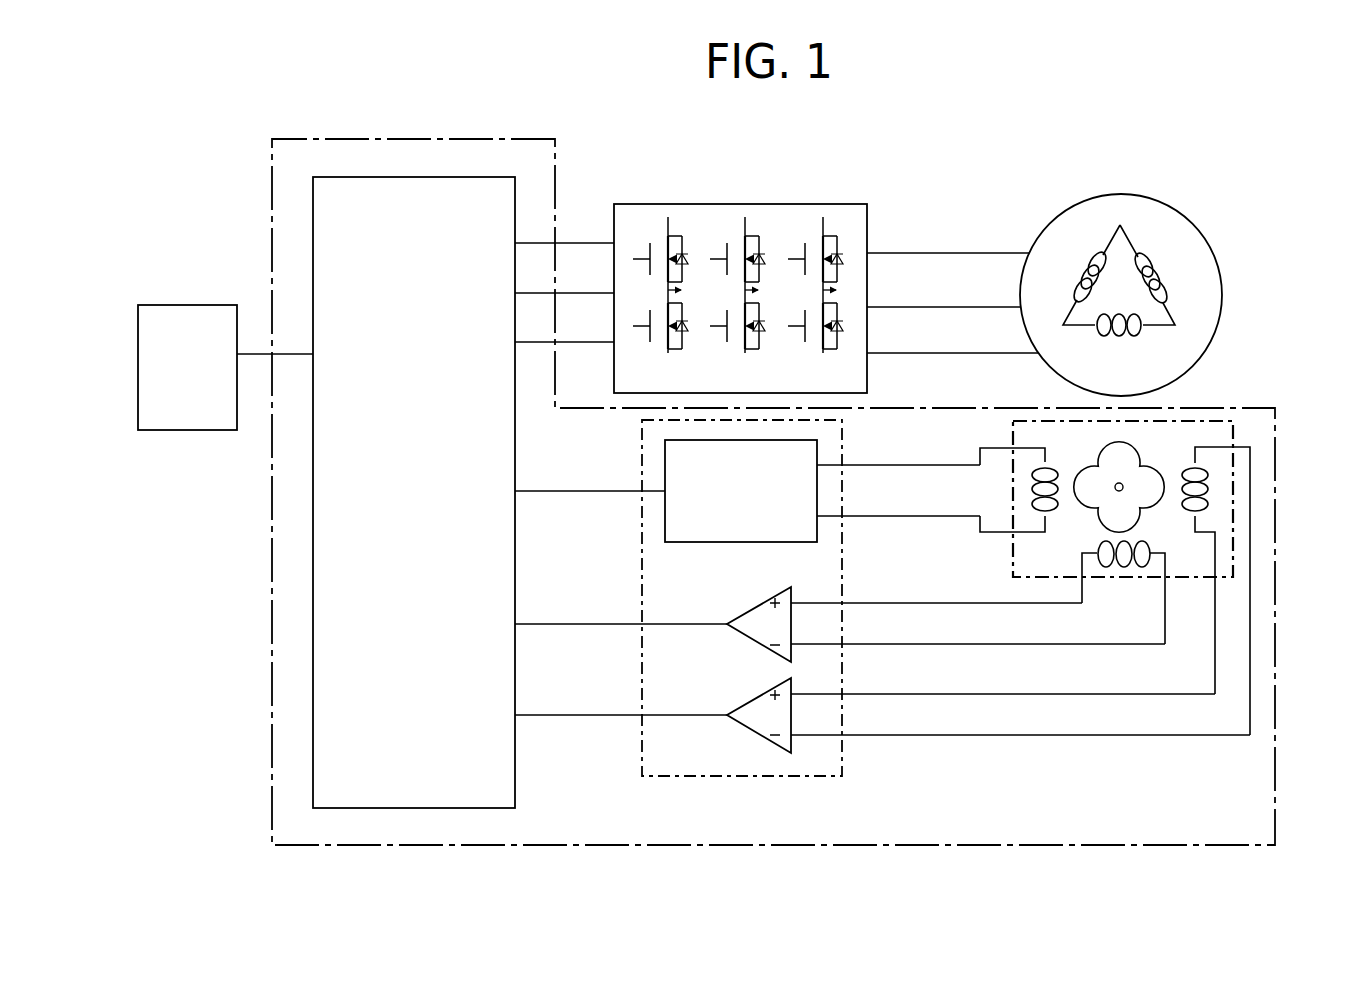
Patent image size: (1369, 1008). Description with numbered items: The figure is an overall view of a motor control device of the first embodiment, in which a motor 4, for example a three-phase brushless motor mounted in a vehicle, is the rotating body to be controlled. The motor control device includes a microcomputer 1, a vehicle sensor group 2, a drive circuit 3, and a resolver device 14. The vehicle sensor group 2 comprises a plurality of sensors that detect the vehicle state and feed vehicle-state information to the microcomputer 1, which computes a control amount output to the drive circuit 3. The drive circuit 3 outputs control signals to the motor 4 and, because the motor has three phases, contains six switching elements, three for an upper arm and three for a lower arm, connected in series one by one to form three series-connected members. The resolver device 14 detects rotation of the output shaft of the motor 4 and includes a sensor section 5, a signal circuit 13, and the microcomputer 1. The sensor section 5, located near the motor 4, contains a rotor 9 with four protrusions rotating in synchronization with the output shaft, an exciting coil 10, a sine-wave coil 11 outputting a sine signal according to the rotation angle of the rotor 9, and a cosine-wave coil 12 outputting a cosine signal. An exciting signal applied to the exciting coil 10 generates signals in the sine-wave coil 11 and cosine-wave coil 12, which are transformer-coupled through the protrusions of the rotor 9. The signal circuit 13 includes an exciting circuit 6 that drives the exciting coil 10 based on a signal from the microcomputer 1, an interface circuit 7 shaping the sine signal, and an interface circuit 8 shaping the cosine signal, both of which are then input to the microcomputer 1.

The microcomputer 1 is at (468, 177).
The vehicle sensor group 2 is at (217, 305).
The drive circuit 3 is at (833, 203).
The motor 4 is at (1198, 220).
The sensor section (resolver) 5 is at (1236, 427).
The exciting circuit 6 is at (718, 542).
The interface circuit 7 is at (742, 637).
The interface circuit 8 is at (742, 727).
The rotor 9 is at (1108, 450).
The exciting coil 10 is at (1040, 506).
The sine-wave coil 11 is at (1120, 567).
The cosine-wave coil 12 is at (1210, 490).
The signal circuit 13 is at (843, 765).
The resolver device 14 is at (1195, 845).